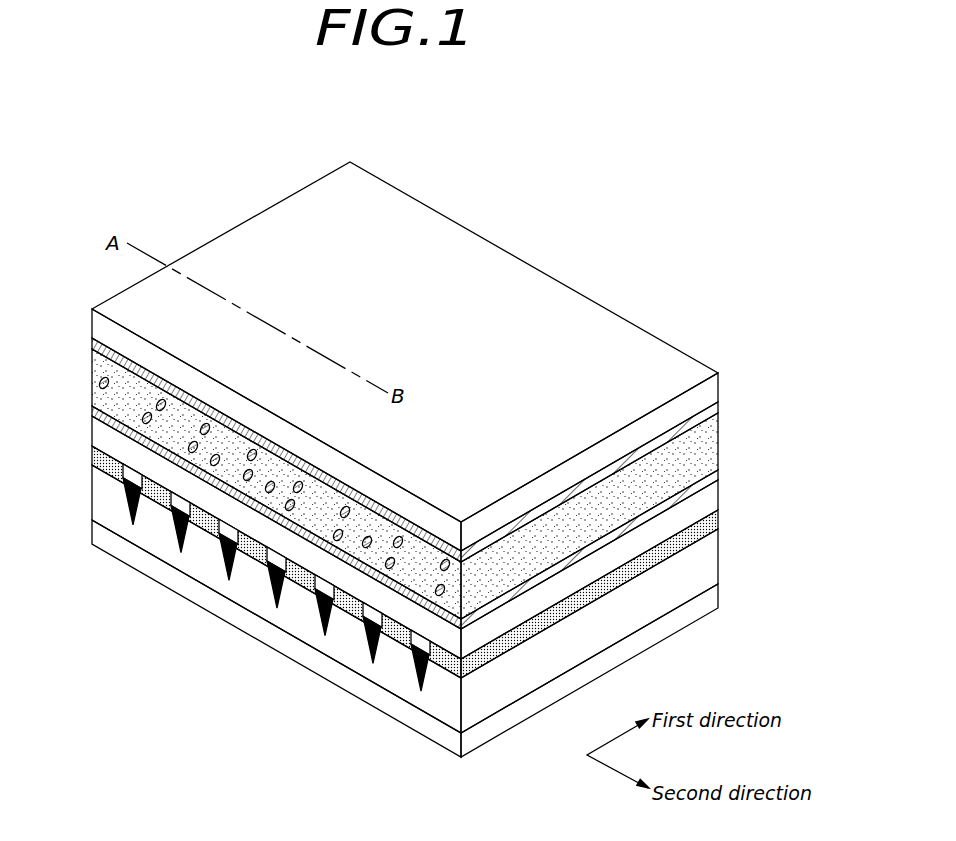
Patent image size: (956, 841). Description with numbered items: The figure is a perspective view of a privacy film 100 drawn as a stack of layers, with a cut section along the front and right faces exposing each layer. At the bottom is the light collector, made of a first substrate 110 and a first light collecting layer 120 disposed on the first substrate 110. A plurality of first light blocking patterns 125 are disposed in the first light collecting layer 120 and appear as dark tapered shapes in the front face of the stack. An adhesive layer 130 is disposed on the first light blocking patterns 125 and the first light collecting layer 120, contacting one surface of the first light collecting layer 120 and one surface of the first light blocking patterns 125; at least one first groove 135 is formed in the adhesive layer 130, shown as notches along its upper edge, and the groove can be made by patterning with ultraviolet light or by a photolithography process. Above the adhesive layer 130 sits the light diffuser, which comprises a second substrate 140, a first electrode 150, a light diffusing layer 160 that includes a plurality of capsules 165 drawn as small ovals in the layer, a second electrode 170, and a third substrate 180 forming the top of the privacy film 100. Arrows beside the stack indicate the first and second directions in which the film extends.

The privacy film 100 is at (409, 472).
The first substrate 110 is at (718, 597).
The first light collecting layer 120 is at (718, 565).
The first light blocking patterns 125 is at (410, 665).
The adhesive layer 130 is at (718, 522).
The first groove 135 is at (122, 472).
The second substrate 140 is at (718, 500).
The first electrode 150 is at (718, 479).
The light diffusing layer 160 is at (718, 442).
The capsules 165 is at (100, 384).
The second electrode 170 is at (718, 411).
The third substrate 180 is at (718, 390).